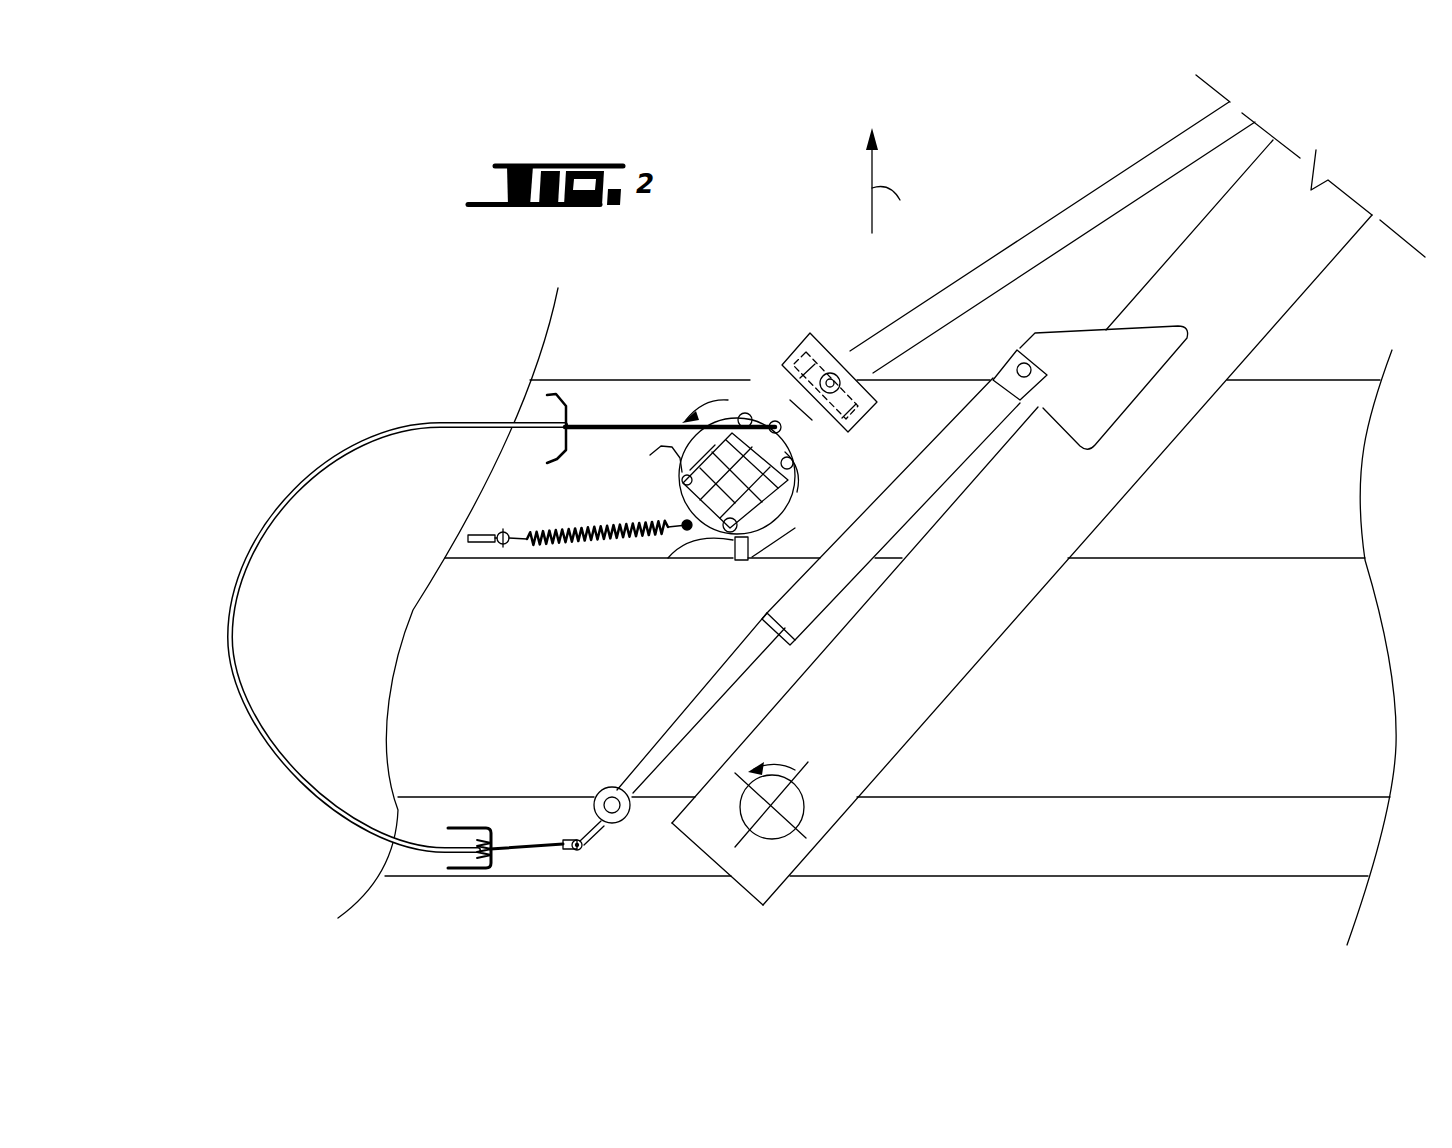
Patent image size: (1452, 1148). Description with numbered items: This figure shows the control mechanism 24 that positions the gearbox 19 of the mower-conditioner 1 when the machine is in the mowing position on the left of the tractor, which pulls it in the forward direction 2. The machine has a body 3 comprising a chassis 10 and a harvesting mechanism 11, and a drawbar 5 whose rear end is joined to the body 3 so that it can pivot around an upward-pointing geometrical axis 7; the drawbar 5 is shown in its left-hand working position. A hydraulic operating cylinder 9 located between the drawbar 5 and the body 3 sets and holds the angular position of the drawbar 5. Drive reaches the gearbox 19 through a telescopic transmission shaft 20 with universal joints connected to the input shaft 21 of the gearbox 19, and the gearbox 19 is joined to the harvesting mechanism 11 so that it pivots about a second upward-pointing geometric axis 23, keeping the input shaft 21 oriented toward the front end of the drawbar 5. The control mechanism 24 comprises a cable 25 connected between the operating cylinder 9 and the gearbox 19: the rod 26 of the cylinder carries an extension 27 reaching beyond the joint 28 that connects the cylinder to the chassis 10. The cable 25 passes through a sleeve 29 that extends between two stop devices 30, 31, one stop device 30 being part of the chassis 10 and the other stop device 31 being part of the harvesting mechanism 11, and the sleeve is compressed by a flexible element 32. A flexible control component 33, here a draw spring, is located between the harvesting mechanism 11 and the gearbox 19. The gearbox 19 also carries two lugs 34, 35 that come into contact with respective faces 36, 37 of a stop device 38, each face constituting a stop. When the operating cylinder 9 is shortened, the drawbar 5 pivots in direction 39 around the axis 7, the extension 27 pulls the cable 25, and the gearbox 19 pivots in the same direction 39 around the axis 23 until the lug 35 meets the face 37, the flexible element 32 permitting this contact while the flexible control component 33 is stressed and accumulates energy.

The mower-conditioner 1 is at (746, 410).
The forward direction 2 is at (890, 180).
The body 3 is at (1230, 673).
The drawbar 5 is at (985, 625).
The geometrical axis 7 is at (772, 812).
The hydraulic operating cylinder 9 is at (806, 600).
The chassis 10 is at (1200, 812).
The harvesting mechanism 11 is at (609, 372).
The gearbox 19 is at (748, 413).
The telescopic transmission shaft 20 is at (1050, 242).
The input shaft 21 is at (820, 460).
The geometric axis 23 is at (797, 462).
The control mechanism 24 is at (505, 635).
The cable 25 is at (540, 853).
The rod 26 is at (660, 748).
The extension 27 is at (600, 828).
The joint 28 is at (597, 798).
The sleeve 29 is at (325, 470).
The stop device 30 is at (465, 827).
The stop device 31 is at (562, 460).
The flexible element 32 is at (490, 832).
The flexible control component 33 is at (580, 545).
The lug 34 is at (763, 531).
The lug 35 is at (678, 450).
The face 36 is at (765, 562).
The face 37 is at (698, 543).
The stop device 38 is at (737, 562).
The direction 39 is at (787, 767).